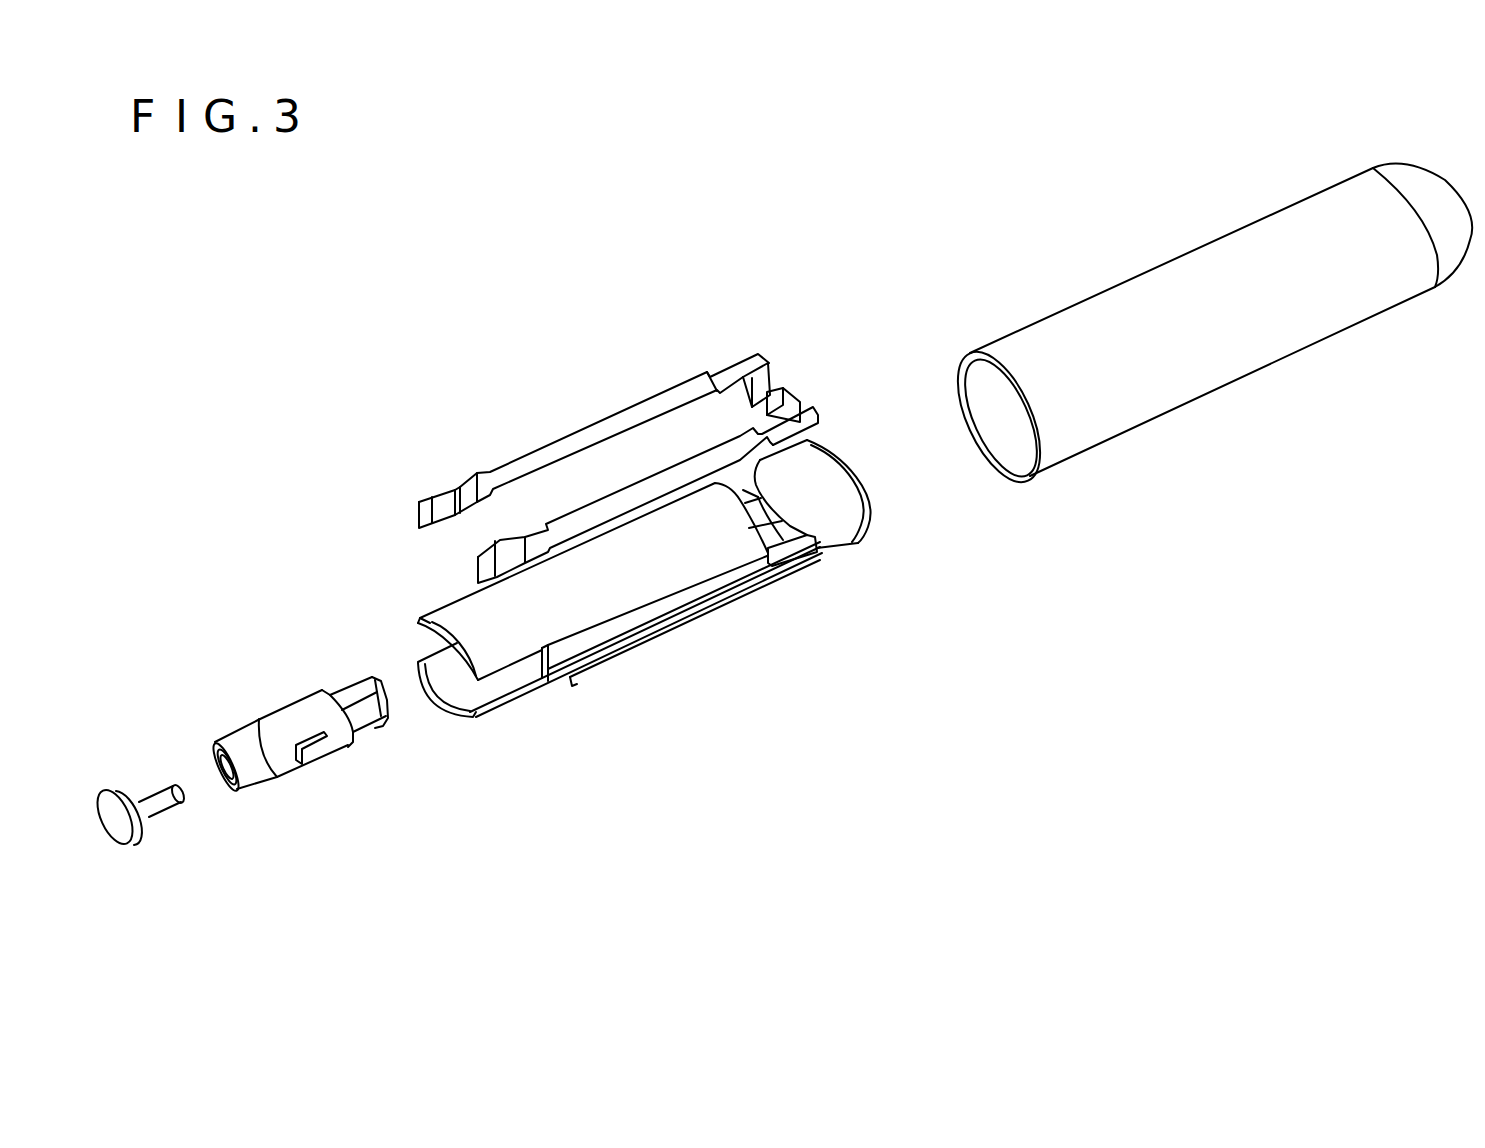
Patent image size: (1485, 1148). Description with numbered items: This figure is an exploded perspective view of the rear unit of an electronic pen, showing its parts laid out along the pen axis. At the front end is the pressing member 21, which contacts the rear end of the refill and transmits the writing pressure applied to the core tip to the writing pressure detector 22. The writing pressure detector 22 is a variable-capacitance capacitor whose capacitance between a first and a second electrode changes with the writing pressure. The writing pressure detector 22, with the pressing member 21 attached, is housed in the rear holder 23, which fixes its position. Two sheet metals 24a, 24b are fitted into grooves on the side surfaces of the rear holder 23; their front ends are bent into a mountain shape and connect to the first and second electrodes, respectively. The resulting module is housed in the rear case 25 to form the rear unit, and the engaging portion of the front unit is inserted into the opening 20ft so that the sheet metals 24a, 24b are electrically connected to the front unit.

The pressing member 21 is at (138, 848).
The writing pressure detector 22 is at (288, 703).
The rear holder 23 is at (570, 673).
The sheet metal 24a is at (487, 470).
The sheet metal 24b is at (810, 412).
The rear case 25 is at (1173, 263).
The opening 20ft is at (965, 455).